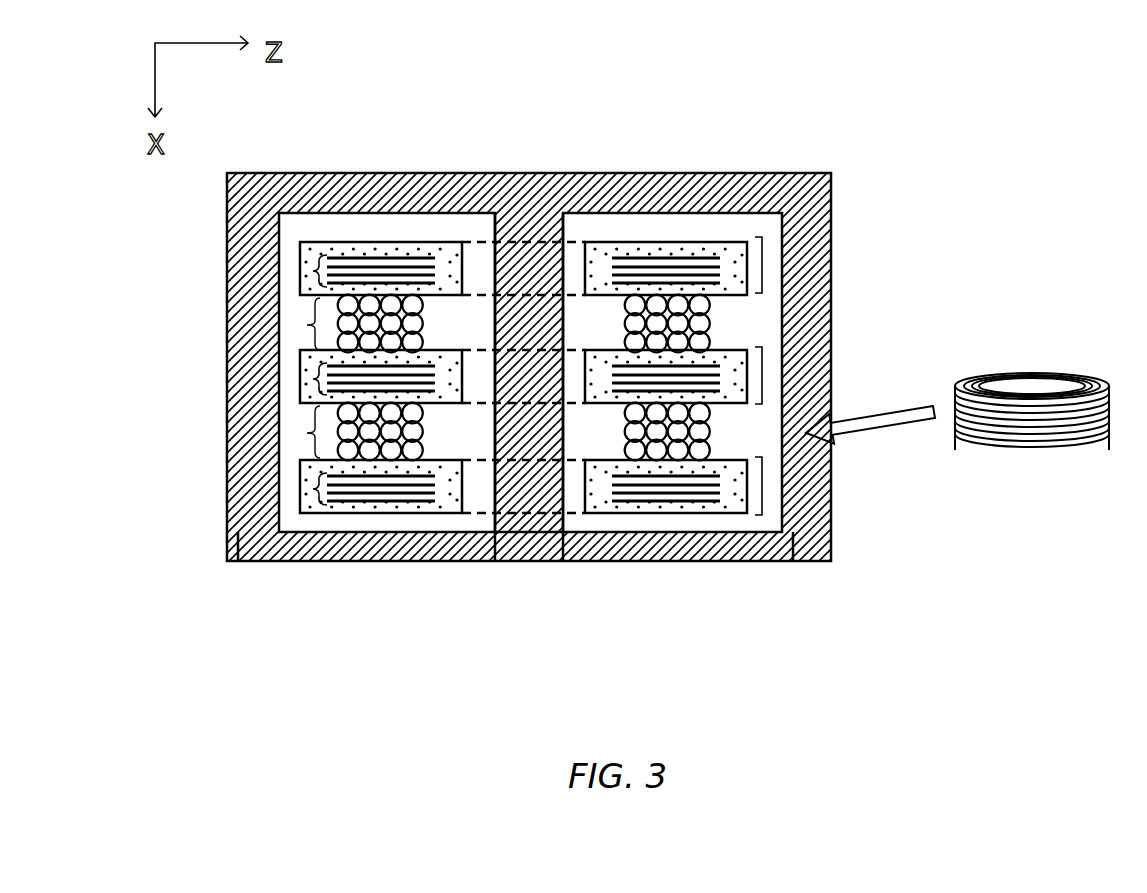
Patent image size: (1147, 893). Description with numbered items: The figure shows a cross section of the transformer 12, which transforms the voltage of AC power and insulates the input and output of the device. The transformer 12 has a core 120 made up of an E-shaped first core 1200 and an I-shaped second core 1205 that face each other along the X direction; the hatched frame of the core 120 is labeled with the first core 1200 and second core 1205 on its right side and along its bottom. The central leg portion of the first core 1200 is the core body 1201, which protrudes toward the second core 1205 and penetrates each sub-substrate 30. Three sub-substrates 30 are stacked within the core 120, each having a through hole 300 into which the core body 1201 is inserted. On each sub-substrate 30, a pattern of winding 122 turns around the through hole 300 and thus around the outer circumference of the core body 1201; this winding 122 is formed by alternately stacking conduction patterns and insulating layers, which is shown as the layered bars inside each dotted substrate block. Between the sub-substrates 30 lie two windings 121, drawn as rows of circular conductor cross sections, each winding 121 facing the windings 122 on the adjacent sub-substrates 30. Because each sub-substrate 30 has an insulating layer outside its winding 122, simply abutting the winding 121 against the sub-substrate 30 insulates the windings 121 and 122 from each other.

The transformer 12 is at (553, 122).
The core 120 is at (985, 503).
The first core 1200 is at (832, 510).
The second core 1205 is at (832, 550).
The core body 1201 is at (495, 561).
The through hole 300 is at (571, 505).
The winding 122 is at (313, 271).
The winding 121 is at (307, 325).
The sub-substrate 30 is at (762, 265).